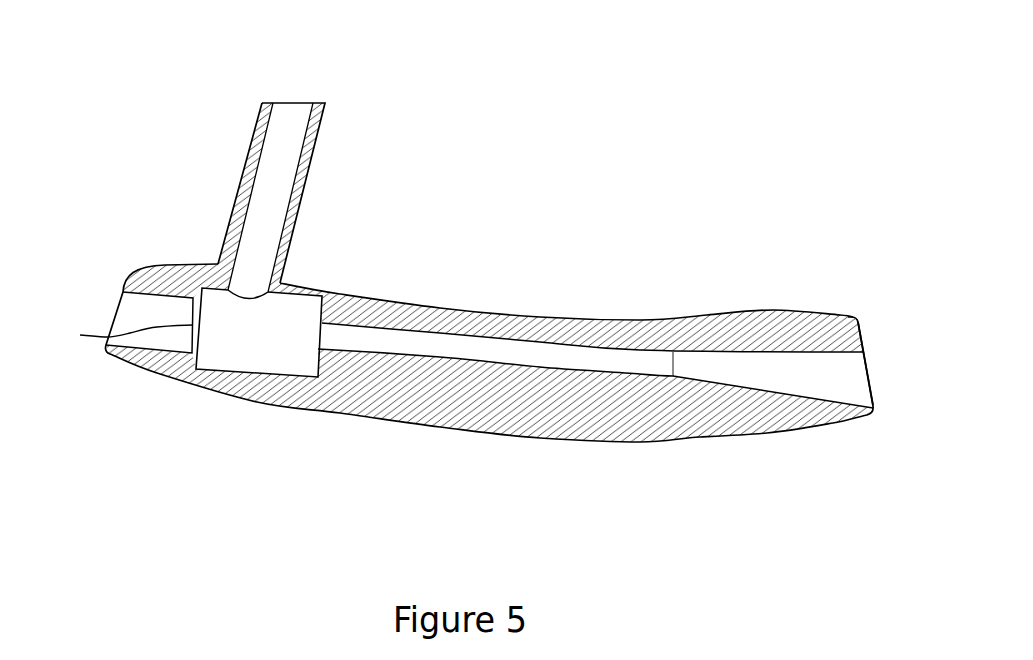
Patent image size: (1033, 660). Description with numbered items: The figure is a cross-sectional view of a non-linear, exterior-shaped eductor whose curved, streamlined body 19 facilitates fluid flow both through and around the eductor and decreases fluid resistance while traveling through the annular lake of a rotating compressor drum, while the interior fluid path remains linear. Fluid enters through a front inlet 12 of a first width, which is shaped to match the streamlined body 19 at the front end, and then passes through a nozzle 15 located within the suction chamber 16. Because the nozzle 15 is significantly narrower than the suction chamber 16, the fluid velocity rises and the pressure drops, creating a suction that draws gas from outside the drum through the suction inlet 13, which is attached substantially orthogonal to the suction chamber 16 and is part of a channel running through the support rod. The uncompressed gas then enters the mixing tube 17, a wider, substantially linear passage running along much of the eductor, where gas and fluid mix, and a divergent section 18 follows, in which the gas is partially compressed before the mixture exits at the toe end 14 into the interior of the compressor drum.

The front inlet 12 is at (113, 318).
The suction inlet 13 is at (288, 118).
The toe 14 is at (870, 365).
The nozzle 15 is at (119, 335).
The suction chamber 16 is at (317, 303).
The mixing tube 17 is at (610, 355).
The divergent section 18 is at (795, 363).
The streamlined body 19 is at (168, 265).